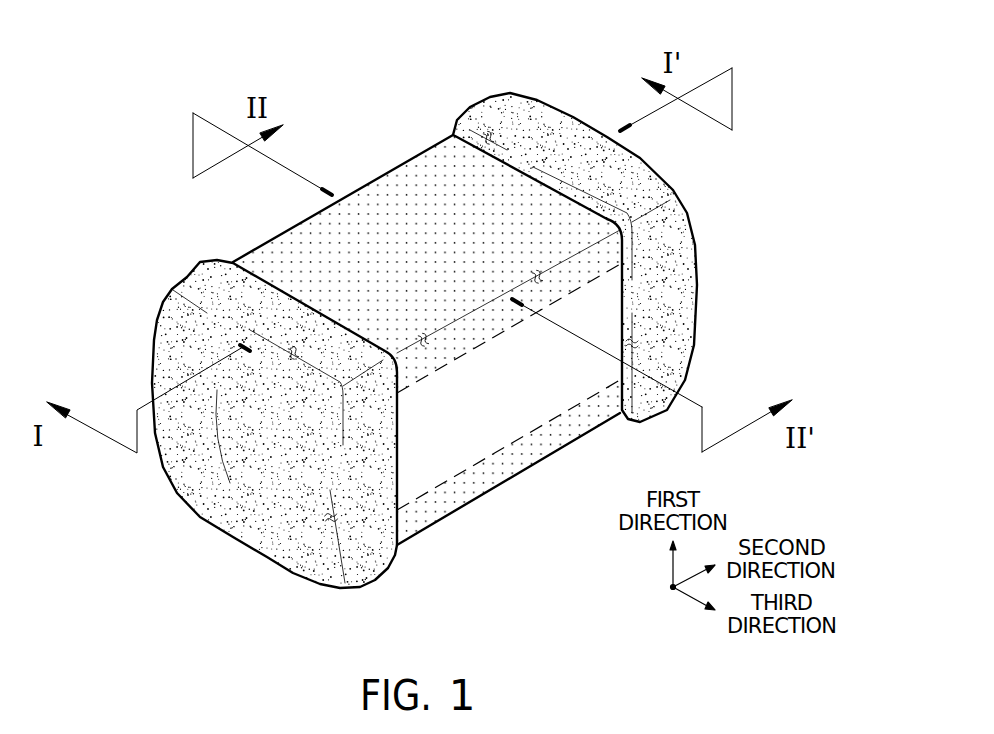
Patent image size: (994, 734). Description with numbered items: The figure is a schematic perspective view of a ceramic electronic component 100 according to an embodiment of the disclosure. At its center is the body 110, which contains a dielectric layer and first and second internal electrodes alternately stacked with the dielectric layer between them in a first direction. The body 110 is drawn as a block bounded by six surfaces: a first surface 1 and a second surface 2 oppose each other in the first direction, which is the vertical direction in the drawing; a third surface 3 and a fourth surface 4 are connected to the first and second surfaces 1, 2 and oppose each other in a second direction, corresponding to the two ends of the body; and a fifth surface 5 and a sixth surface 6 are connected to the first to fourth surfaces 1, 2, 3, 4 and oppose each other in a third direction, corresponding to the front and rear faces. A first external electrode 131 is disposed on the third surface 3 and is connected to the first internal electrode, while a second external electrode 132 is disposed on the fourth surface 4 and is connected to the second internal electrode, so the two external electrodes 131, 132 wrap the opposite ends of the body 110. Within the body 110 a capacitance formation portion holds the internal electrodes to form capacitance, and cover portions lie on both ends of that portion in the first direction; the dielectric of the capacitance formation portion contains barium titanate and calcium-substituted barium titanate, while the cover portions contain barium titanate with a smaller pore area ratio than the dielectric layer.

The ceramic electronic component 100 is at (311, 54).
The body 110 is at (291, 244).
The first surface 1 is at (478, 472).
The second surface 2 is at (432, 207).
The third surface 3 is at (258, 483).
The fourth surface 4 is at (663, 275).
The fifth surface 5 is at (383, 199).
The sixth surface 6 is at (505, 412).
The first external electrode 131 is at (202, 280).
The second external electrode 132 is at (483, 115).